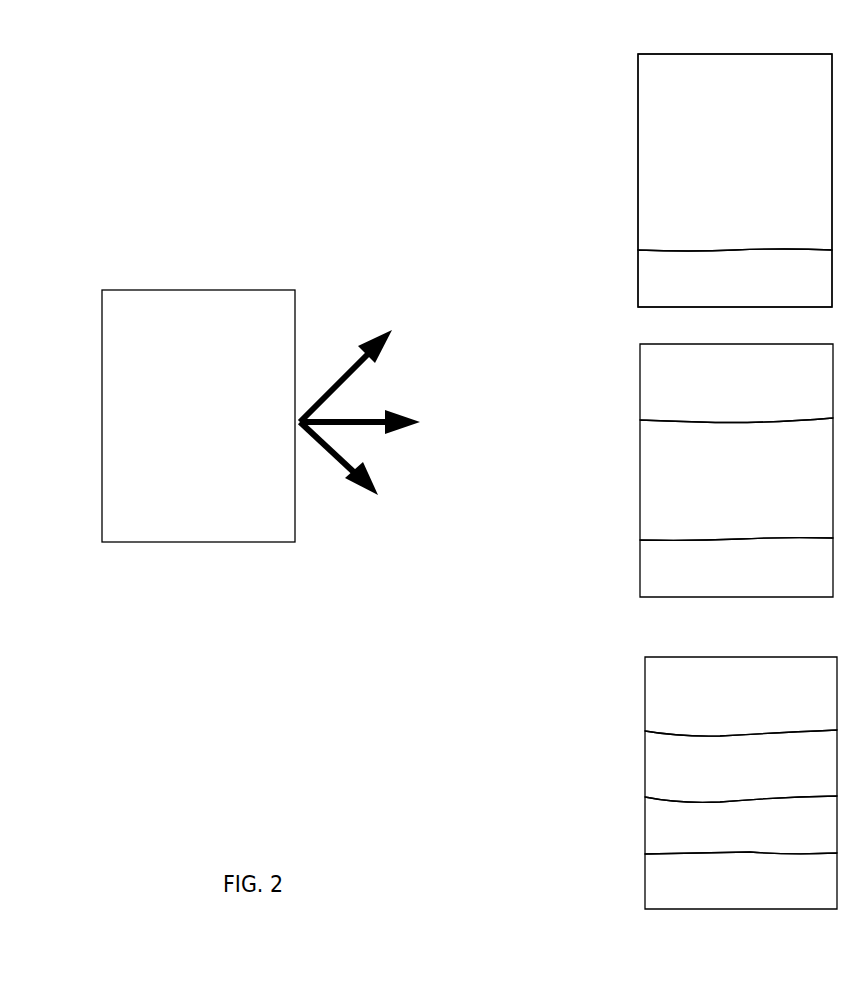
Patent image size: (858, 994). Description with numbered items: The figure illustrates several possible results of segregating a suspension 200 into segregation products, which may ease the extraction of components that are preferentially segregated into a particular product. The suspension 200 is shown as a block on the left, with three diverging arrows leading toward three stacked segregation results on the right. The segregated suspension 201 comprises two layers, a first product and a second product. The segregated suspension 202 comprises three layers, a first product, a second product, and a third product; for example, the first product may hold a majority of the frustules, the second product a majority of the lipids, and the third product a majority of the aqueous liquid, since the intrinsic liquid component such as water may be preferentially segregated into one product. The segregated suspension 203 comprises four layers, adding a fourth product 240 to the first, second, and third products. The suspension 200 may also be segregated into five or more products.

The suspension 200 is at (172, 380).
The segregated suspension 201 is at (596, 160).
The segregated suspension 202 is at (602, 466).
The segregated suspension 203 is at (608, 781).
The fourth product 240 is at (708, 843).